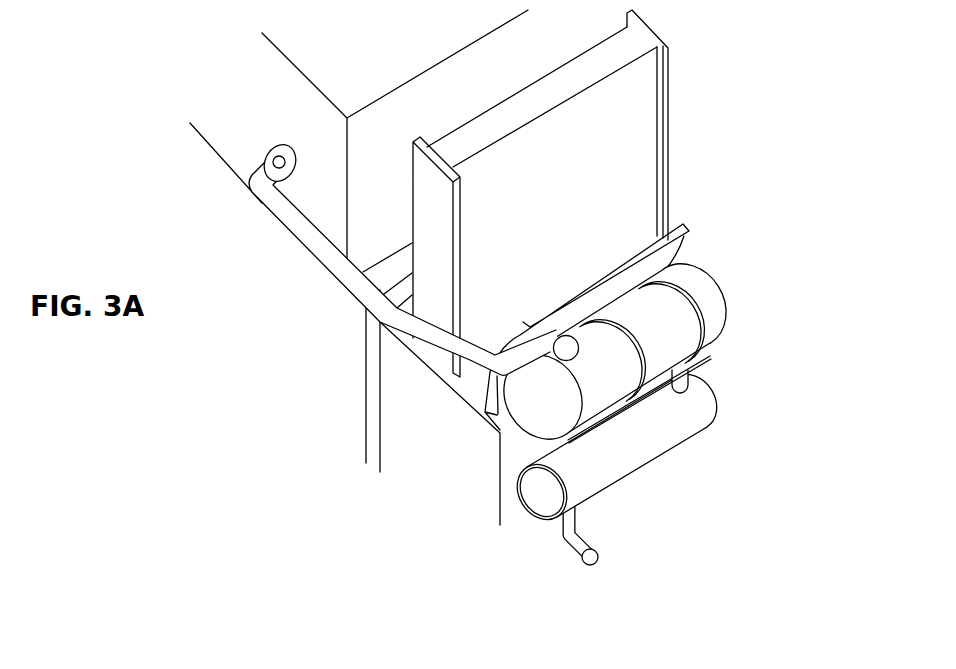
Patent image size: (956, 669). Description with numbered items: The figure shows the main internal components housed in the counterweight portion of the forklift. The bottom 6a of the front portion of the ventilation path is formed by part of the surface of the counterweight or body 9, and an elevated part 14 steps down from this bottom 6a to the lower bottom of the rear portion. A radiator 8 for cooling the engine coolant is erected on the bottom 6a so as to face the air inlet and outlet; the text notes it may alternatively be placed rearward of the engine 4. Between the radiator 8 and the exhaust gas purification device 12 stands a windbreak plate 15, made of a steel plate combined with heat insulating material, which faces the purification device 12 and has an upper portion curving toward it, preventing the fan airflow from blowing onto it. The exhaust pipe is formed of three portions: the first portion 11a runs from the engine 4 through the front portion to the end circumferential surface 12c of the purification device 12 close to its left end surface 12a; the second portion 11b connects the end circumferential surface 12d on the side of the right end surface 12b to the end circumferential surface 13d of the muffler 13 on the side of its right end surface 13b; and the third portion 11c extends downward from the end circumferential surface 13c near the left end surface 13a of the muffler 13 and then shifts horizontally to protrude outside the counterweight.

The engine 4 is at (377, 120).
The bottom of front portion 6a is at (468, 387).
The radiator 8 is at (635, 118).
The counterweight or body 9 is at (402, 433).
The first portion 11a is at (330, 266).
The second portion 11b is at (688, 381).
The third portion 11c is at (570, 543).
The exhaust gas purification device 12 is at (623, 359).
The left end surface 12a is at (500, 433).
The right end surface 12b is at (738, 289).
The end circumferential surface 12c is at (616, 395).
The end circumferential surface 12d is at (707, 354).
The muffler 13 is at (646, 467).
The left end surface 13a is at (540, 512).
The right end surface 13b is at (734, 408).
The end circumferential surface 13c is at (577, 492).
The end circumferential surface 13d is at (702, 430).
The elevated part 14 is at (512, 480).
The windbreak plate 15 is at (482, 412).